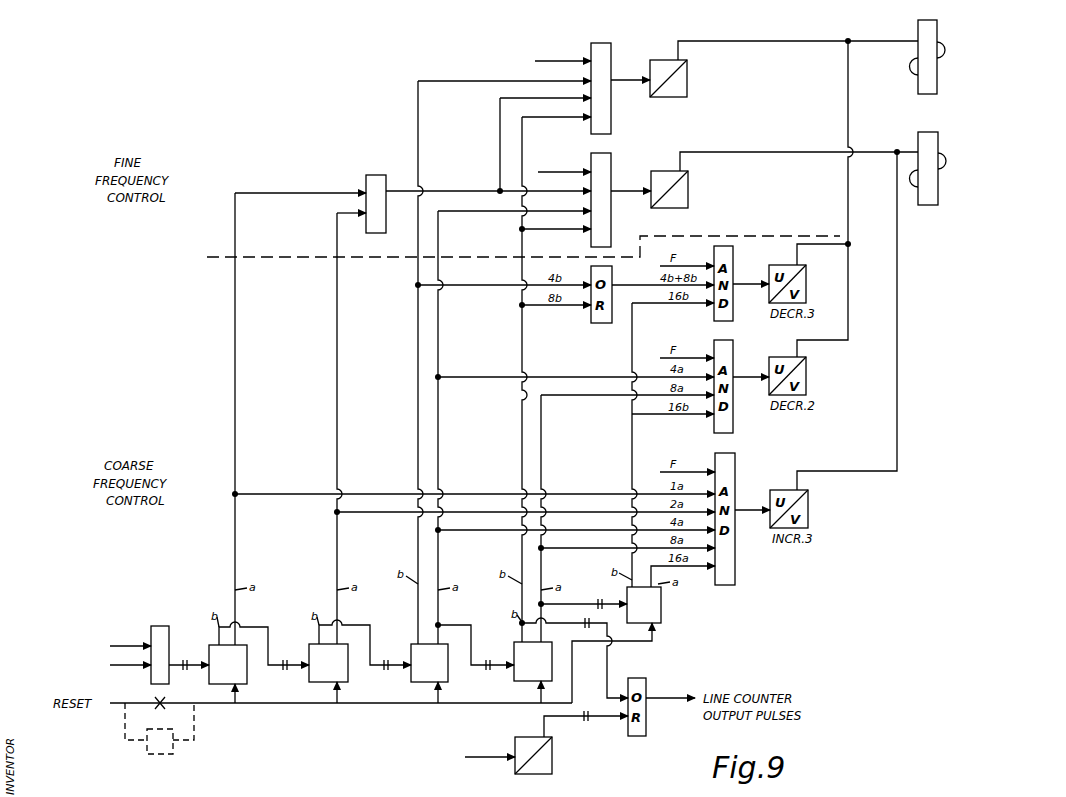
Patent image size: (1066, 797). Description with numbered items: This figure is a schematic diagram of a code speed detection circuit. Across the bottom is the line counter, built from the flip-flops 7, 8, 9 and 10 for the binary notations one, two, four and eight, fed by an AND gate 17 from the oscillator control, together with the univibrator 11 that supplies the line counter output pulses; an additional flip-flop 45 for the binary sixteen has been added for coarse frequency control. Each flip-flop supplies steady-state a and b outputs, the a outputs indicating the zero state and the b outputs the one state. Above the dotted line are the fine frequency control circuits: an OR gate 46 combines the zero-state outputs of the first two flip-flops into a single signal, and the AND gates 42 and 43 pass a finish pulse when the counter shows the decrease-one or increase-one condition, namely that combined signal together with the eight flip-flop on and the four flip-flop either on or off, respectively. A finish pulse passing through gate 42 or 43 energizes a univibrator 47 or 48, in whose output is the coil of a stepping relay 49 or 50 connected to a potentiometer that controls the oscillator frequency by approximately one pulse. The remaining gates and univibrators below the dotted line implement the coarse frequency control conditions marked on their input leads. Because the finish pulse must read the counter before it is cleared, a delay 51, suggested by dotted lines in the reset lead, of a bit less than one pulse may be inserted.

The gate 42 is at (598, 46).
The gate 43 is at (600, 156).
The OR gate 46 is at (366, 178).
The univibrator 47 is at (687, 80).
The univibrator 48 is at (684, 184).
The stepping relay 49 is at (921, 188).
The stepping relay 50 is at (880, 311).
The flip-flop 45 is at (657, 598).
The AND gate 17 is at (151, 630).
The flip-flop 7 is at (209, 673).
The flip-flop 8 is at (309, 675).
The flip-flop 9 is at (411, 675).
The flip-flop 10 is at (514, 675).
The univibrator 11 is at (552, 757).
The delay 51 is at (174, 748).